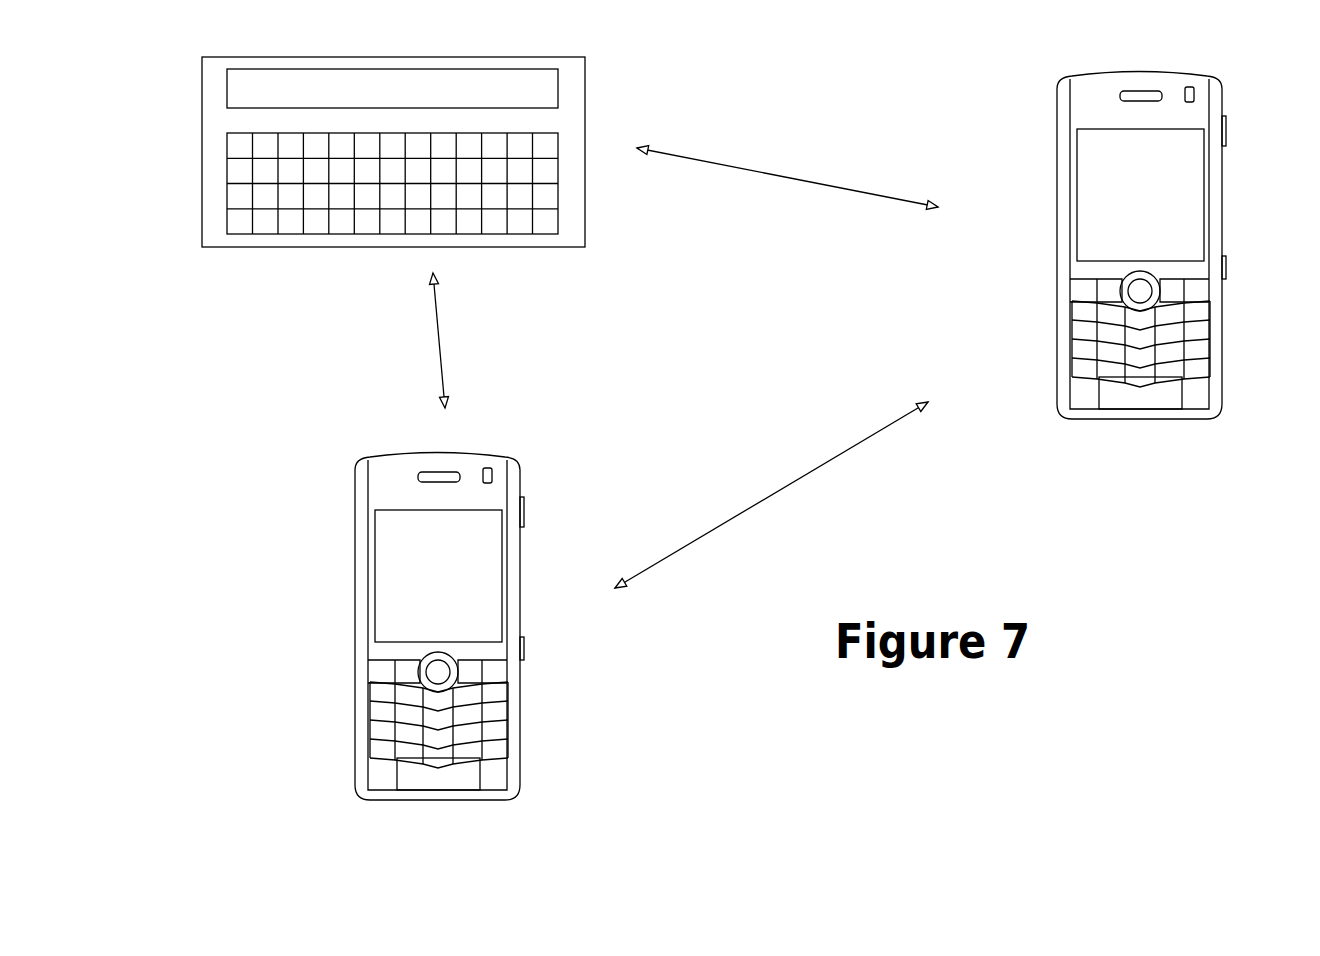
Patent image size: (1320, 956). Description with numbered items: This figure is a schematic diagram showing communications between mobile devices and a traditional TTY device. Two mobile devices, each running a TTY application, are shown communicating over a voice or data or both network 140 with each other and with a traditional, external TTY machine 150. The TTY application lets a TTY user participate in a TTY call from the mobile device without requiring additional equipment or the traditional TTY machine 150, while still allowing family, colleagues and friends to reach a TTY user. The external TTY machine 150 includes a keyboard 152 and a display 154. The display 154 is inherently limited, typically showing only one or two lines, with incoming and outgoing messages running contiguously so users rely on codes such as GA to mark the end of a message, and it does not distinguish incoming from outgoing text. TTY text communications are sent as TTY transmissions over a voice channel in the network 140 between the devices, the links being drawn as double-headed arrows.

The network 140 is at (702, 466).
The TTY machine 150 is at (253, 247).
The keyboard 152 is at (558, 208).
The display 154 is at (558, 82).